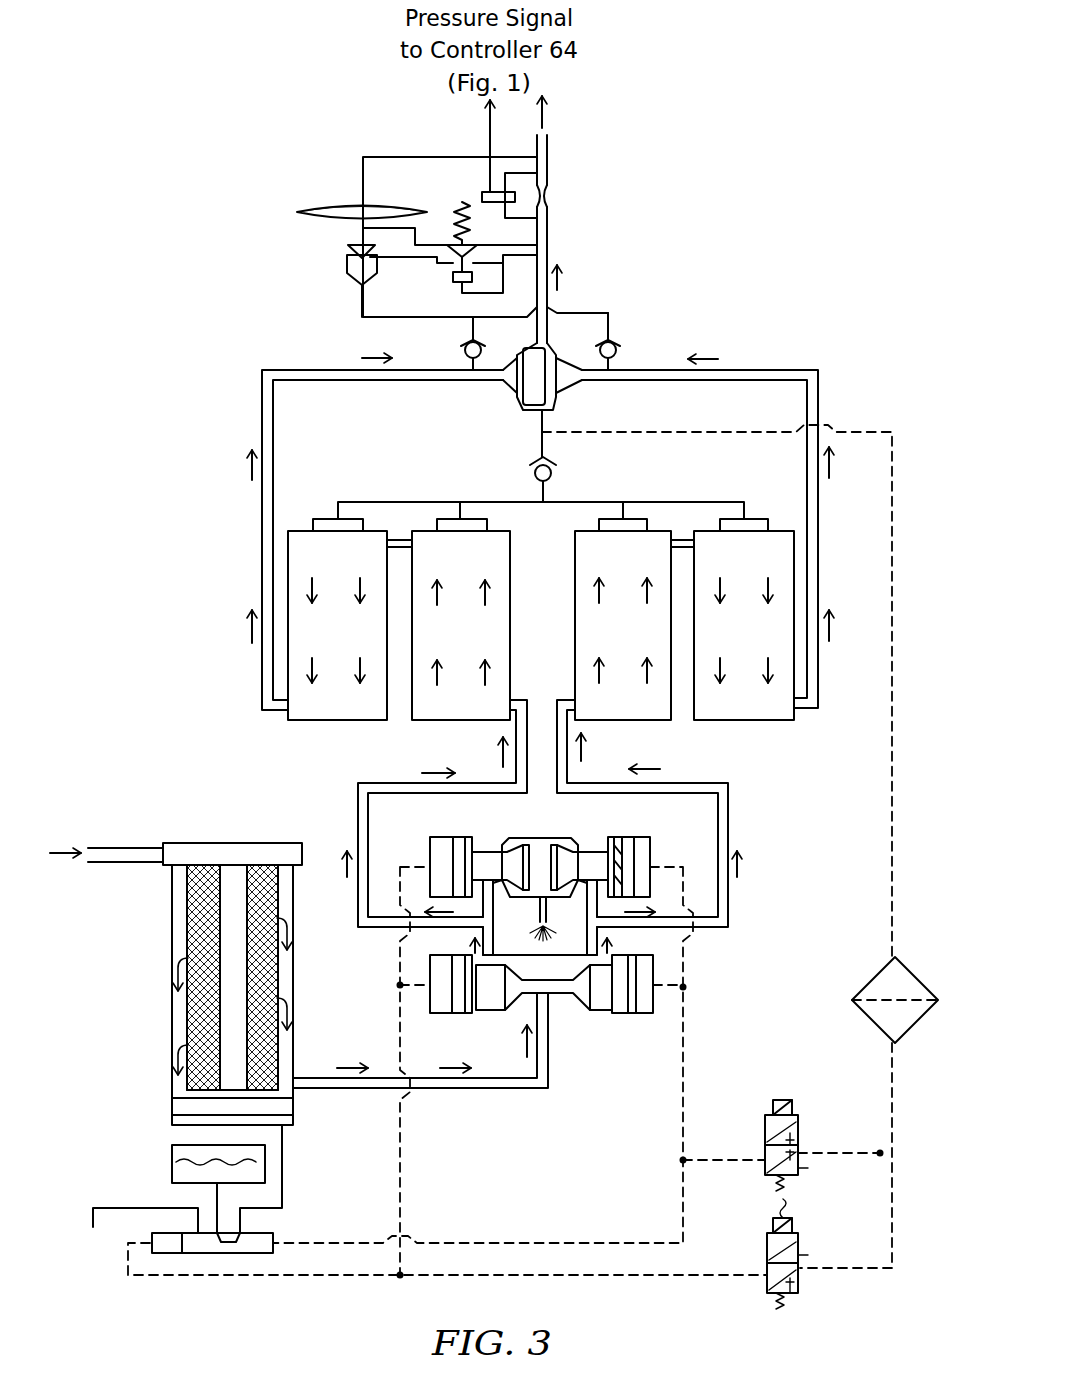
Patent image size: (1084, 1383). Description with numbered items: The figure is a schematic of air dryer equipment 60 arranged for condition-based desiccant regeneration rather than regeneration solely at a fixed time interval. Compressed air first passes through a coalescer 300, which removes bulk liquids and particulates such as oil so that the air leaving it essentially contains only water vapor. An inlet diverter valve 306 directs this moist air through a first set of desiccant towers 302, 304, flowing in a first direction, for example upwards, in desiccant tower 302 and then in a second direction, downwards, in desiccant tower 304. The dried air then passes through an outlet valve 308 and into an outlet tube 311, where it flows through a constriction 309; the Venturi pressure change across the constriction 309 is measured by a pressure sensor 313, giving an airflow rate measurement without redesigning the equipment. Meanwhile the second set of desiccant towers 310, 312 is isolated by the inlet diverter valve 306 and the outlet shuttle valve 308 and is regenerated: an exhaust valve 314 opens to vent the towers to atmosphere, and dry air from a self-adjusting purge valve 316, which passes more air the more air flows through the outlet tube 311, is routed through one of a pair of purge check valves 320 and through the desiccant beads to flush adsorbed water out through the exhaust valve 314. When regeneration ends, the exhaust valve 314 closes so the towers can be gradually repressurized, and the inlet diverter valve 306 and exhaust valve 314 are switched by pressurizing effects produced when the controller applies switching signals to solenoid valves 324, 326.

The air dryer equipment 60 is at (728, 231).
The coalescer 300 is at (172, 931).
The desiccant tower 302 is at (625, 722).
The desiccant tower 304 is at (755, 722).
The inlet diverter valve 306 is at (557, 1003).
The outlet valve 308 is at (515, 403).
The constriction 309 is at (548, 195).
The desiccant tower 310 is at (327, 722).
The outlet tube 311 is at (548, 145).
The desiccant tower 312 is at (460, 722).
The pressure sensor 313 is at (483, 193).
The exhaust valve 314 is at (545, 838).
The self-adjusting purge valve 316 is at (340, 208).
The purge check valves 320 is at (464, 346).
The solenoid valve 324 is at (800, 1126).
The solenoid valve 326 is at (800, 1244).